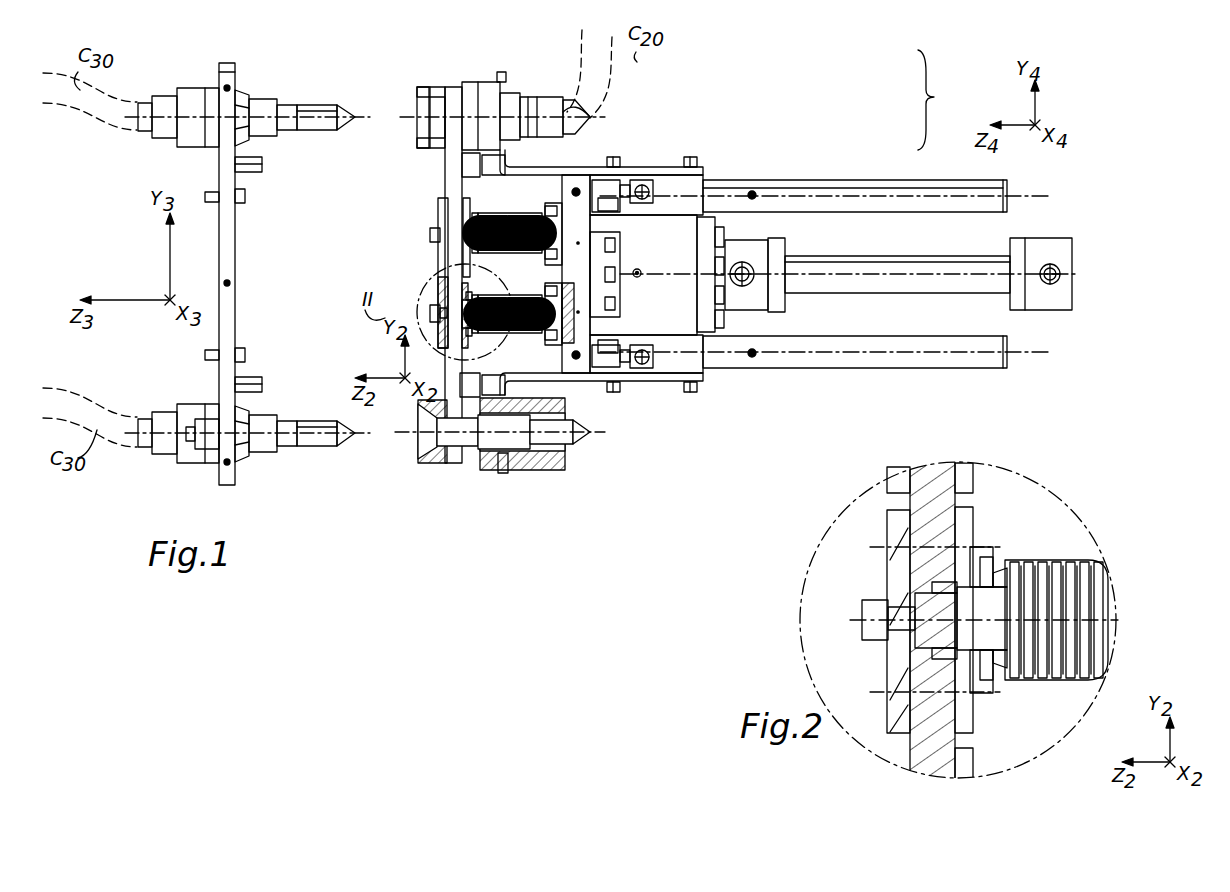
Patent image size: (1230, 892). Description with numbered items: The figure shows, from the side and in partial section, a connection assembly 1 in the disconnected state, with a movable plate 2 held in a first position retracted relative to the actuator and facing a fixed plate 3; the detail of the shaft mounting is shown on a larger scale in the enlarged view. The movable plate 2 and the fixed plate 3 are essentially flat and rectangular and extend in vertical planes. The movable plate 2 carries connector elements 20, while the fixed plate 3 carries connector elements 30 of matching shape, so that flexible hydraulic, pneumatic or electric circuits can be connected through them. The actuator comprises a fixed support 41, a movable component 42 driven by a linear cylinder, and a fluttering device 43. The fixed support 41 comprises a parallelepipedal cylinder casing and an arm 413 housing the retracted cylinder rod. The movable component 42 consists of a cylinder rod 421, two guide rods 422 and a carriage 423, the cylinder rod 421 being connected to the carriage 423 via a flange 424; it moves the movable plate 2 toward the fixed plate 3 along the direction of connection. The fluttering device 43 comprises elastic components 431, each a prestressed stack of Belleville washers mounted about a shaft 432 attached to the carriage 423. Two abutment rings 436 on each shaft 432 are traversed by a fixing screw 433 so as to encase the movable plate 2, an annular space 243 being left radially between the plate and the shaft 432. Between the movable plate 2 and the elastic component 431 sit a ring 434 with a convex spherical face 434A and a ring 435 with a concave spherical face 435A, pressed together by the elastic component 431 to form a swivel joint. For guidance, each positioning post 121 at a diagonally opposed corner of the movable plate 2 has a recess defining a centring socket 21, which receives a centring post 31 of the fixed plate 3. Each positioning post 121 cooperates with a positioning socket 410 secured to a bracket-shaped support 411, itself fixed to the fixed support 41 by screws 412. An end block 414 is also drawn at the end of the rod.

In FIG. 1, the connection assembly 1 is at (498, 565).
In FIG. 1, the movable plate 2 is at (455, 95).
In FIG. 2, the movable plate 2 is at (935, 755).
In FIG. 1, the fixed plate 3 is at (230, 63).
In FIG. 1, the connector elements 20 is at (488, 92).
In FIG. 1, the centring socket 21 is at (458, 470).
In FIG. 1, the connector elements 30 is at (262, 100).
In FIG. 1, the centring post 31 is at (315, 108).
In FIG. 1, the fixed support 41 is at (820, 274).
In FIG. 1, the movable component 42 is at (940, 100).
In FIG. 1, the fluttering device 43 is at (542, 212).
In FIG. 1, the positioning post 121 is at (592, 117).
In FIG. 2, the annular space 243 is at (927, 535).
In FIG. 1, the positioning socket 410 is at (548, 98).
In FIG. 1, the bracket-shaped support 411 is at (578, 172).
In FIG. 1, the screws 412 is at (615, 157).
In FIG. 1, the arm 413 is at (975, 255).
In FIG. 1, the end block 414 is at (1058, 250).
In FIG. 1, the cylinder rod 421 is at (818, 190).
In FIG. 1, the guide rods 422 is at (862, 345).
In FIG. 1, the carriage 423 is at (745, 180).
In FIG. 1, the flange 424 is at (760, 192).
In FIG. 1, the elastic component 431 is at (490, 232).
In FIG. 2, the elastic component 431 is at (1085, 600).
In FIG. 1, the shaft 432 is at (445, 290).
In FIG. 2, the shaft 432 is at (990, 615).
In FIG. 2, the fixing screw 433 is at (868, 615).
In FIG. 2, the ring 434 is at (1000, 670).
In FIG. 2, the convex spherical face 434A is at (990, 690).
In FIG. 2, the ring 435 is at (992, 690).
In FIG. 2, the concave spherical face 435A is at (1035, 600).
In FIG. 2, the abutment rings 436 is at (895, 670).